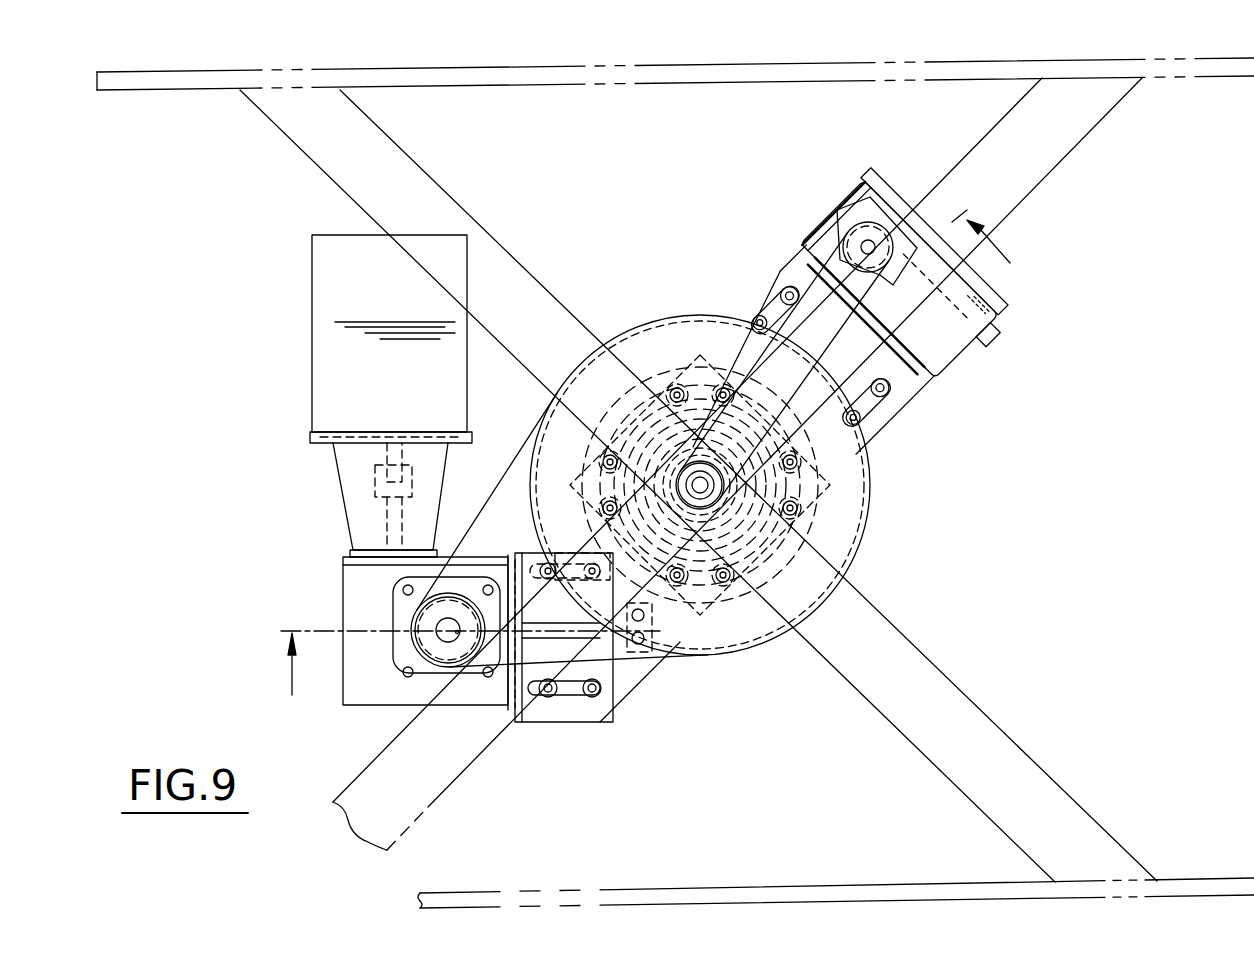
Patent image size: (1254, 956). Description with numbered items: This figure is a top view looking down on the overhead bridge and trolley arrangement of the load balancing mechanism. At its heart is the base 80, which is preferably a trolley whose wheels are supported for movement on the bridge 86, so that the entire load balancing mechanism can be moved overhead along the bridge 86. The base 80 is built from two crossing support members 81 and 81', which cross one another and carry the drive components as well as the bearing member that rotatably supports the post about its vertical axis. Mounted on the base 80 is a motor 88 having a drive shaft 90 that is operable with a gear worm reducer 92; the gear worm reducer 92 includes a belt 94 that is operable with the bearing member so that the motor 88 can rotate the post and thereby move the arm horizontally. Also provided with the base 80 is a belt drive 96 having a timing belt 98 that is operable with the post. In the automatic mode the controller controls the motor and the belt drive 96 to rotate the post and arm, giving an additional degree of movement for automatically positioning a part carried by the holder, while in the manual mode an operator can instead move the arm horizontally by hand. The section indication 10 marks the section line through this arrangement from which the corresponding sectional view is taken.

The section line 10- 10 is at (654, 454).
The base 80 is at (1153, 320).
The crossing support member 81 is at (698, 486).
The crossing support member 81' is at (771, 464).
The bridge 86 is at (1207, 885).
The motor 88 is at (325, 322).
The drive shaft 90 is at (387, 533).
The gear worm reducer 92 is at (425, 680).
The belt 94 is at (527, 447).
The belt drive 96 is at (858, 225).
The timing belt 98 is at (805, 268).